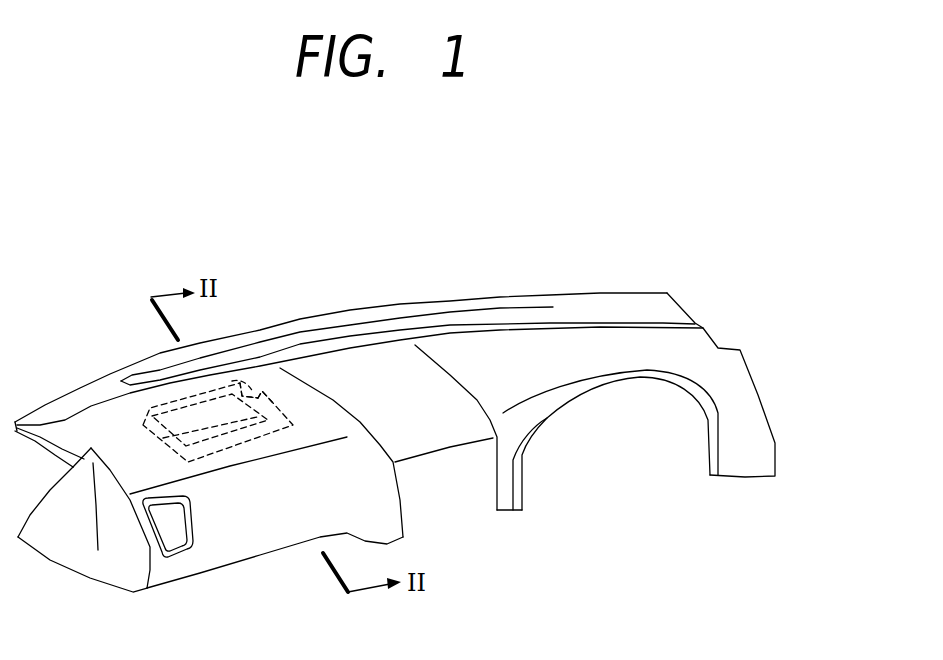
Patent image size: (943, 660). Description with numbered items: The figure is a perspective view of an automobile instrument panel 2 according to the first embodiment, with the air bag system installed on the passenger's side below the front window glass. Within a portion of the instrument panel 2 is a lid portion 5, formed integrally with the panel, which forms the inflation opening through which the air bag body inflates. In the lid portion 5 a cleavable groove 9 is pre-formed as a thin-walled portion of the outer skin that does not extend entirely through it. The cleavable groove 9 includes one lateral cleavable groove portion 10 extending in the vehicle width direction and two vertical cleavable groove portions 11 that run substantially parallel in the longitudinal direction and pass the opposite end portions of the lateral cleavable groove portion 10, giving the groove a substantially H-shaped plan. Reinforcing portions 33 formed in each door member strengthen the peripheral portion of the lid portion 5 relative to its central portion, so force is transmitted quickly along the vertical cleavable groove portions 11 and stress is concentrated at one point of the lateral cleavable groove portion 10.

The instrument panel 2 is at (368, 300).
The lid portion 5 is at (177, 408).
The cleavable groove 9 is at (340, 227).
The lateral cleavable groove portion 10 is at (241, 396).
The vertical cleavable groove portions 11 is at (266, 396).
The reinforcing portion 33 is at (148, 419).